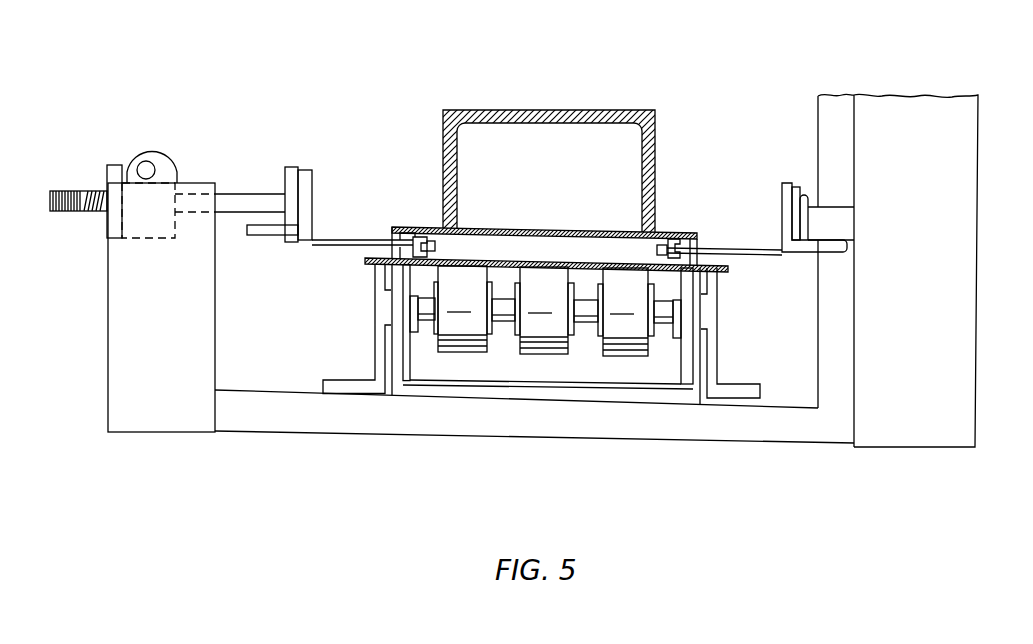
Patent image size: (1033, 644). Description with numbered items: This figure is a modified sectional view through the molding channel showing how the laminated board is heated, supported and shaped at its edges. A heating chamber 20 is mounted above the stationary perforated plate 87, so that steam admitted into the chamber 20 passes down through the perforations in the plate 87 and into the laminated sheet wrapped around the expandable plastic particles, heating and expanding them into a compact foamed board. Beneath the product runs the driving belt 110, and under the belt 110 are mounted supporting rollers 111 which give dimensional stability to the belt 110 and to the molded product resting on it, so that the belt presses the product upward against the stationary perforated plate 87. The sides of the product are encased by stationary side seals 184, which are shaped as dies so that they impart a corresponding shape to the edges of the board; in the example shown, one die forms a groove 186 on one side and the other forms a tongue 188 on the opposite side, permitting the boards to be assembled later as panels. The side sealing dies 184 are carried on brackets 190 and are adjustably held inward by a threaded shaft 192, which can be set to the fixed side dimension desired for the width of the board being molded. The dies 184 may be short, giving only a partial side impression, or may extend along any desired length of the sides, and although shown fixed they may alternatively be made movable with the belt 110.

The heating chamber 20 is at (593, 111).
The stationary perforated plate 87 is at (535, 228).
The driving belt 110 is at (726, 271).
The supporting rollers 111 is at (545, 311).
The side seals 184 is at (393, 245).
The groove 186 is at (657, 250).
The tongue 188 is at (435, 246).
The brackets 190 is at (366, 242).
The threaded shaft 192 is at (258, 195).